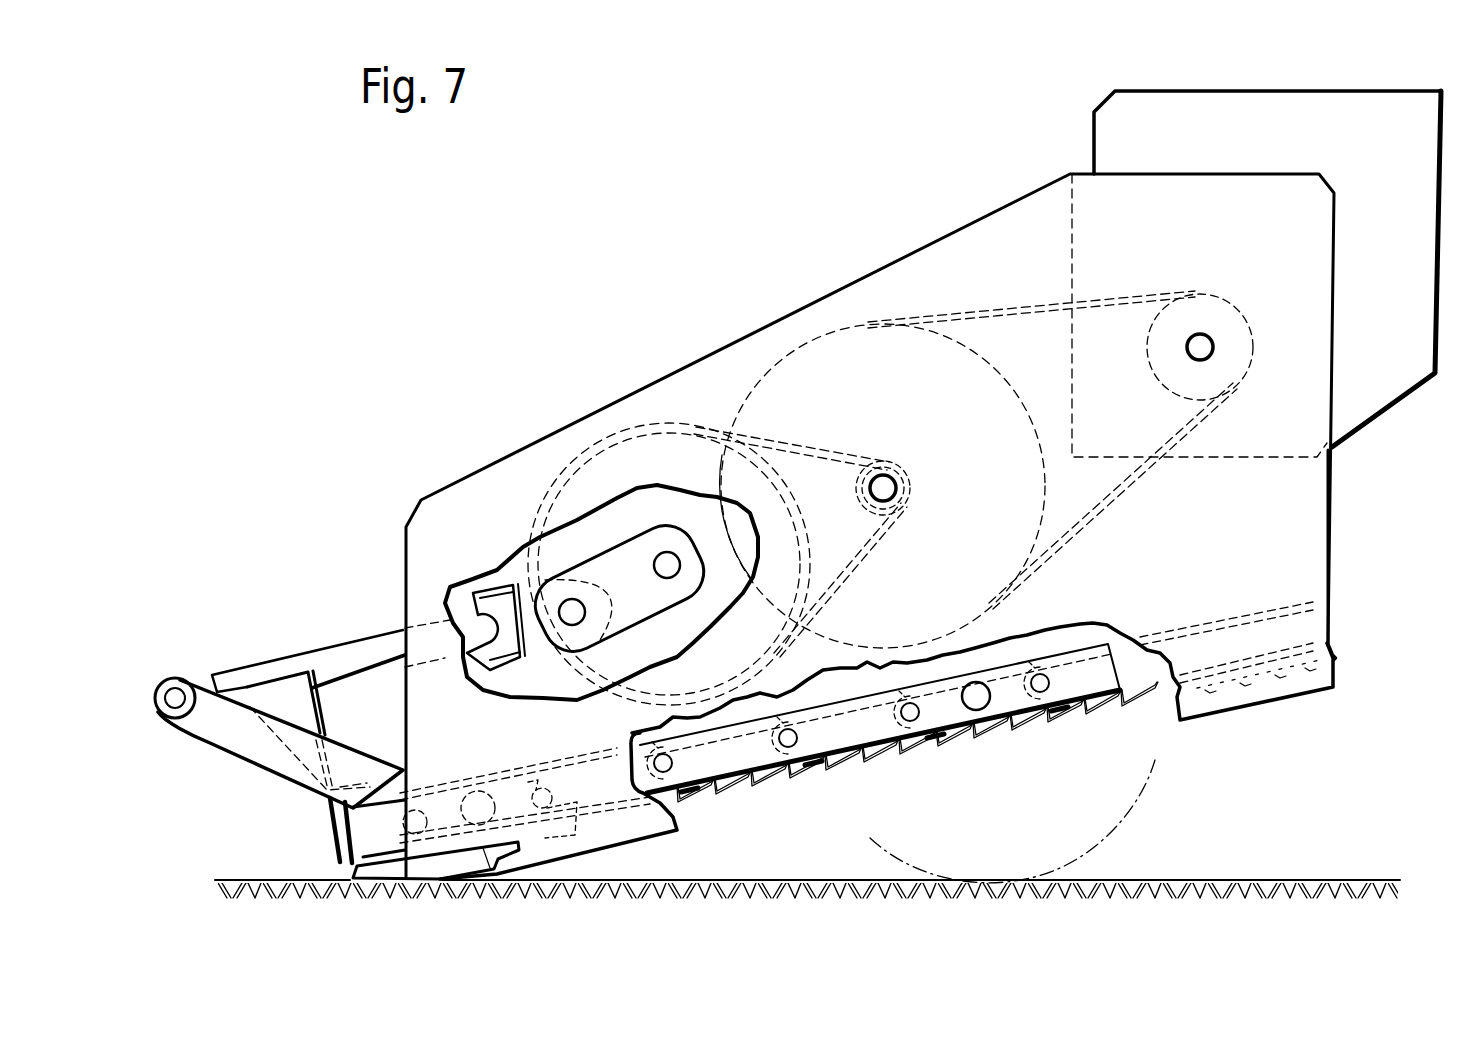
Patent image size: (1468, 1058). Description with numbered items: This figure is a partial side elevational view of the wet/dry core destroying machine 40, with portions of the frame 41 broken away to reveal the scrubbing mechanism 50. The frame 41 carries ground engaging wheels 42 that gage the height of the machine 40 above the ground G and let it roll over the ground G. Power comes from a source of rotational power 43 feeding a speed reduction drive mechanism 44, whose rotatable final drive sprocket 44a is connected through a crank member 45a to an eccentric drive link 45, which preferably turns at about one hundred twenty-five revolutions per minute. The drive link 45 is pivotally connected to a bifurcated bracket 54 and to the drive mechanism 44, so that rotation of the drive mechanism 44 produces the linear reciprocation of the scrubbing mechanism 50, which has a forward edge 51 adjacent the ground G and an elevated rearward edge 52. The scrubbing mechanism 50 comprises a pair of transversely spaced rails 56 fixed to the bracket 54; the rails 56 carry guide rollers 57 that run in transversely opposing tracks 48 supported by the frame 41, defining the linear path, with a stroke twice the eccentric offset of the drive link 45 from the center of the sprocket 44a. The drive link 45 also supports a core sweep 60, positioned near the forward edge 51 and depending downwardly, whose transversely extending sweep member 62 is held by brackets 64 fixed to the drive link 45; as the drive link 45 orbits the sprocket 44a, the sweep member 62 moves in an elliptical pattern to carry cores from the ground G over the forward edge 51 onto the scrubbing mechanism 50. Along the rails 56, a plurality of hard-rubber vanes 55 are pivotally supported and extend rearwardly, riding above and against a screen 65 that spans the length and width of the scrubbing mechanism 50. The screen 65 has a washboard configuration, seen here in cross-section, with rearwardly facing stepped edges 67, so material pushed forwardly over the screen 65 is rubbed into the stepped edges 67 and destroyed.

The core destroying machine 40 is at (540, 285).
The source of rotational power 43 is at (1151, 89).
The speed reduction drive mechanism 44 is at (752, 300).
The final drive sprocket 44a is at (580, 452).
The crank member 45a is at (620, 560).
The eccentric drive link 45 is at (347, 653).
The brackets 64 is at (285, 703).
The bifurcated bracket 54 is at (255, 773).
The forward edge 51 is at (350, 877).
The core sweep 60 is at (372, 726).
The sweep member 62 is at (358, 850).
The scrubbing mechanism 50 is at (1135, 568).
The tracks 48 is at (1247, 610).
The frame 41 is at (1328, 573).
The rearward edge 52 is at (1334, 658).
The rails 56 is at (850, 733).
The screen 65 is at (1007, 737).
The vanes 55 is at (800, 783).
The stepped edges 67 is at (747, 780).
The guide rollers 57 is at (1000, 680).
The ground engaging wheels 42 is at (1127, 817).
The ground G is at (1278, 880).